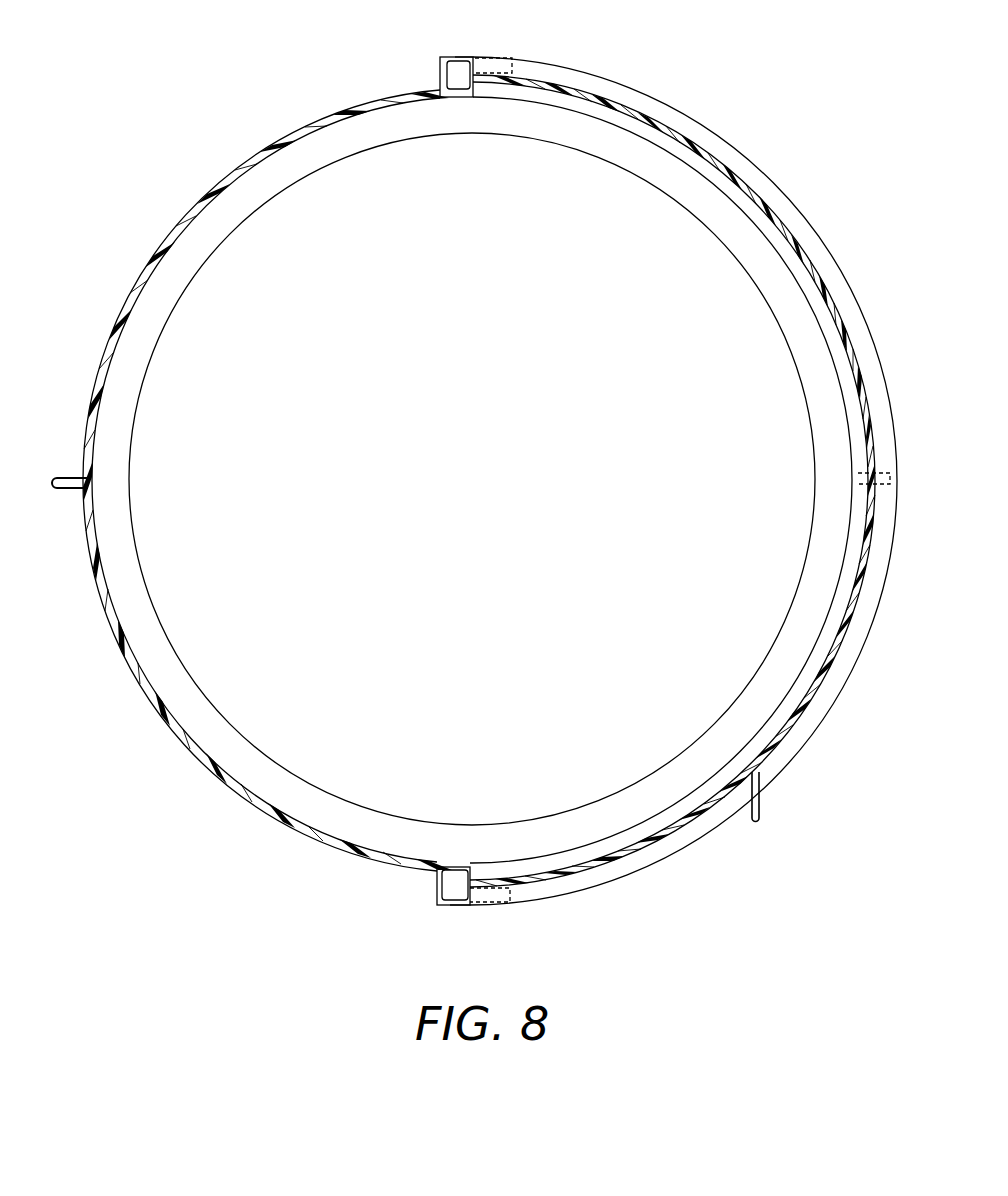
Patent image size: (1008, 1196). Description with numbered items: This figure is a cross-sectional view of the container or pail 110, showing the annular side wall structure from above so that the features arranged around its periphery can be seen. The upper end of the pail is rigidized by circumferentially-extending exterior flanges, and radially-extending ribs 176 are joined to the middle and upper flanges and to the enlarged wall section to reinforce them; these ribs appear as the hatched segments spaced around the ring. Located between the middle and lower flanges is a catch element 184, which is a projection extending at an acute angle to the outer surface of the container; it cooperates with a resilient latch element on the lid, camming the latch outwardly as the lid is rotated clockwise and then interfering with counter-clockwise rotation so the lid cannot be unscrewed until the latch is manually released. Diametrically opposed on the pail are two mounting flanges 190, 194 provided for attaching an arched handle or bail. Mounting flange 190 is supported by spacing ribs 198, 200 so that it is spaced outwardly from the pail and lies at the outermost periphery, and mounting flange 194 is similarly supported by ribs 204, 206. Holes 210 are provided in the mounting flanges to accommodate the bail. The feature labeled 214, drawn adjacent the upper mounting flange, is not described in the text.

The container (pail) 110 is at (236, 824).
The radially-extending ribs 176 is at (62, 478).
The catch element 184 is at (760, 808).
The mounting flange 194 is at (440, 59).
The rib 204 is at (440, 74).
The upper housing top wall 214 is at (462, 57).
The rib 206 is at (514, 57).
The spacing rib 198 is at (437, 882).
The mounting flange 190 is at (437, 904).
The holes 210 is at (460, 905).
The spacing rib 200 is at (513, 902).